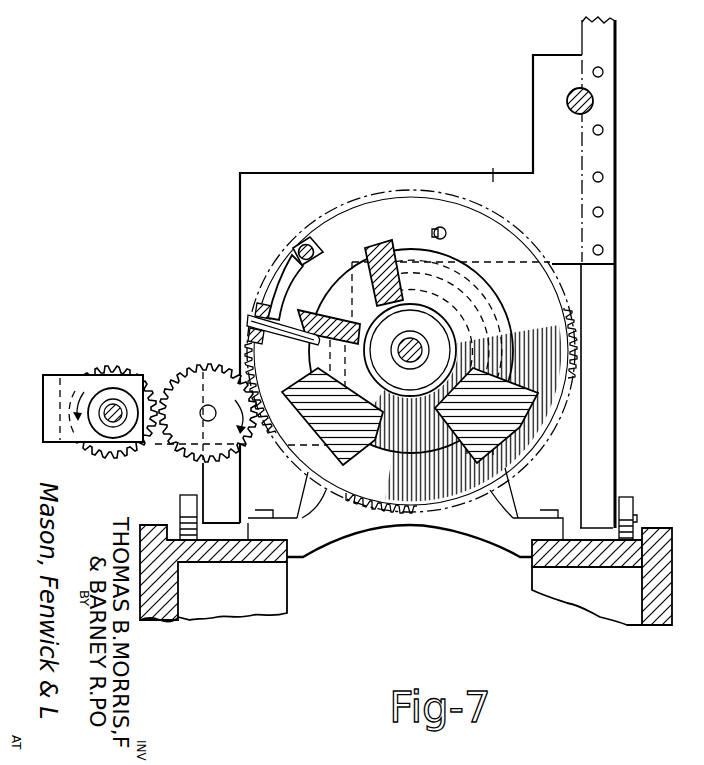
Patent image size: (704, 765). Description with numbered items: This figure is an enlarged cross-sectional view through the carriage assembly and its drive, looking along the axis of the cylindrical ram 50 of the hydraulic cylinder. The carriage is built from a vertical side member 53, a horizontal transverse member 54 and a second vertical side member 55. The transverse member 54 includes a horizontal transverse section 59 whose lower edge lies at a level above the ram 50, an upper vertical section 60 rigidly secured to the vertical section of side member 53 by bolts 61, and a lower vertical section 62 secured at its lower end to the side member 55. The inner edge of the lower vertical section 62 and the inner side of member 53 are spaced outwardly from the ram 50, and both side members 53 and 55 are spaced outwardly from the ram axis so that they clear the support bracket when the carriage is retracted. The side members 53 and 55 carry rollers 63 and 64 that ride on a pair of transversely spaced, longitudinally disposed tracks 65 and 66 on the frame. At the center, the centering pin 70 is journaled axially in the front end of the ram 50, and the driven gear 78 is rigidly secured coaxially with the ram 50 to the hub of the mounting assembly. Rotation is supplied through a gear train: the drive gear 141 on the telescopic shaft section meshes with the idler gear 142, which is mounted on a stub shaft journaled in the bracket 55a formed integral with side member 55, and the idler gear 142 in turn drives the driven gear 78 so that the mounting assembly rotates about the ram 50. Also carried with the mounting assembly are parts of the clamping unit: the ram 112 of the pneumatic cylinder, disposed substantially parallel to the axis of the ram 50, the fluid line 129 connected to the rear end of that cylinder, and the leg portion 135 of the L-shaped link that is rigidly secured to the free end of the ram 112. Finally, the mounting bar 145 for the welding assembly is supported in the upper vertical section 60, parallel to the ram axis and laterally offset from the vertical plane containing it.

The cylindrical ram 50 is at (428, 322).
The vertical side member 53 is at (608, 307).
The horizontal transverse member 54 is at (405, 174).
The vertical side member 55 is at (200, 478).
The bracket 55a is at (69, 371).
The horizontal transverse section 59 is at (481, 160).
The upper vertical section 60 is at (605, 150).
The bolts 61 is at (604, 212).
The lower vertical section 62 is at (239, 300).
The roller 63 is at (636, 502).
The roller 64 is at (178, 502).
The track 65 is at (572, 568).
The track 66 is at (220, 566).
The centering pin 70 is at (398, 360).
The driven gear 78 is at (560, 353).
The ram 112 is at (314, 246).
The fluid line 129 is at (282, 337).
The leg portion 135 is at (273, 268).
The drive gear 141 is at (112, 364).
The idler gear 142 is at (207, 364).
The mounting bar 145 is at (594, 101).